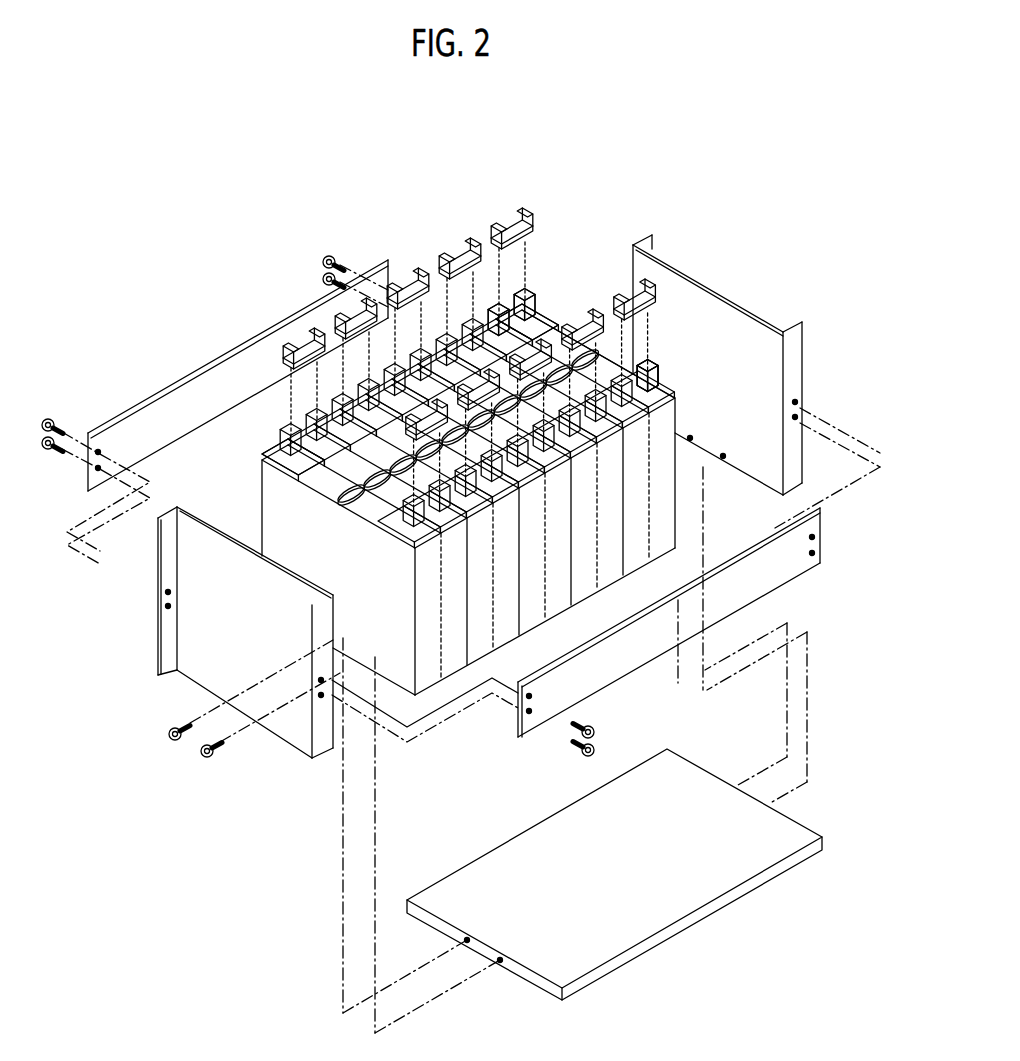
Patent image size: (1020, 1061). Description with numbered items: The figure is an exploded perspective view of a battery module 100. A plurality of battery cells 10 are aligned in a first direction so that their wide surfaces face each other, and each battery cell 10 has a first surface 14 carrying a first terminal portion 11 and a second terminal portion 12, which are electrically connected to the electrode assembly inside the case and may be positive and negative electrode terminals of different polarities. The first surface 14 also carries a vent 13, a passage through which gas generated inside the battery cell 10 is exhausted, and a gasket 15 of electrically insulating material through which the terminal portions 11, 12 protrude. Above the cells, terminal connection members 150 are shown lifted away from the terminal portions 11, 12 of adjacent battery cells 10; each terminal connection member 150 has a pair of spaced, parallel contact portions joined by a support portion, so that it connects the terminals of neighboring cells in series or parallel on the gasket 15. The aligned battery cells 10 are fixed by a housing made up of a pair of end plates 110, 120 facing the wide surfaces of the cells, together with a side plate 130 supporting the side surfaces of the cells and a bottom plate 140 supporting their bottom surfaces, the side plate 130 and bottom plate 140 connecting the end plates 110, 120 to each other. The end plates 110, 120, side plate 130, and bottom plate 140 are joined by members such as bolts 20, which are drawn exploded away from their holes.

The battery module 100 is at (185, 255).
The battery cell 10 is at (486, 610).
The first terminal portion 11 is at (523, 306).
The second terminal portion 12 is at (493, 326).
The vent 13 is at (579, 339).
The first surface 14 is at (543, 320).
The gasket 15 is at (302, 465).
The bolt 20 is at (593, 749).
The end plate 110 is at (154, 651).
The end plate 120 is at (818, 352).
The side plate 130 is at (230, 338).
The bottom plate 140 is at (672, 942).
The terminal connection member 150 is at (513, 218).